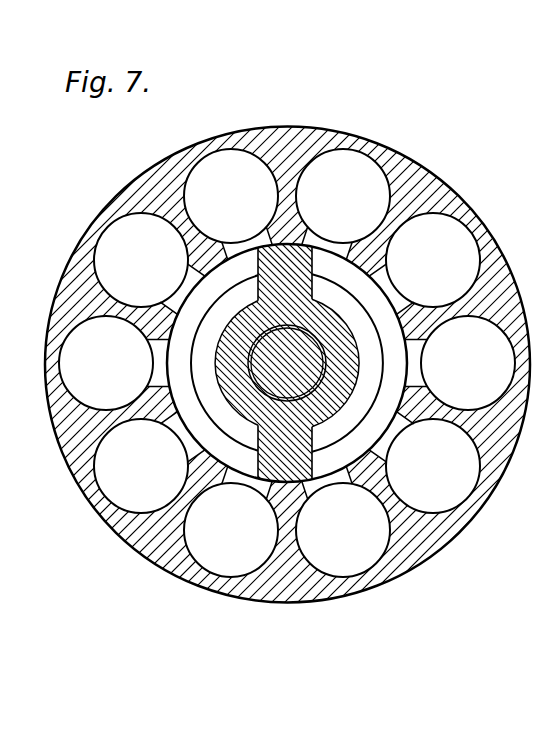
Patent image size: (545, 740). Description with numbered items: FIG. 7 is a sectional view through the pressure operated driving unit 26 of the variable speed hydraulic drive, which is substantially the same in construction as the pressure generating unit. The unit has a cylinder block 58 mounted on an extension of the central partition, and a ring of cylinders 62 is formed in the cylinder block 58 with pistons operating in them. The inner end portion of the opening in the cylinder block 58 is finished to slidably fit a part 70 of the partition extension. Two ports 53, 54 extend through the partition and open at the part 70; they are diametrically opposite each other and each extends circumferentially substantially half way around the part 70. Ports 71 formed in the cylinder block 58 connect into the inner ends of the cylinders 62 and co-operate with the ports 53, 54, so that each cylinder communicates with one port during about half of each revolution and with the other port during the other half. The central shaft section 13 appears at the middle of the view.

The pressure operated driving unit 26 is at (423, 190).
The cylinder block 58 is at (77, 437).
The cylinders 62 is at (287, 363).
The ports 71 is at (285, 374).
The part of extension 70 is at (265, 487).
The port 54 is at (272, 370).
The port 53 is at (287, 365).
The shaft bore 13 is at (267, 380).